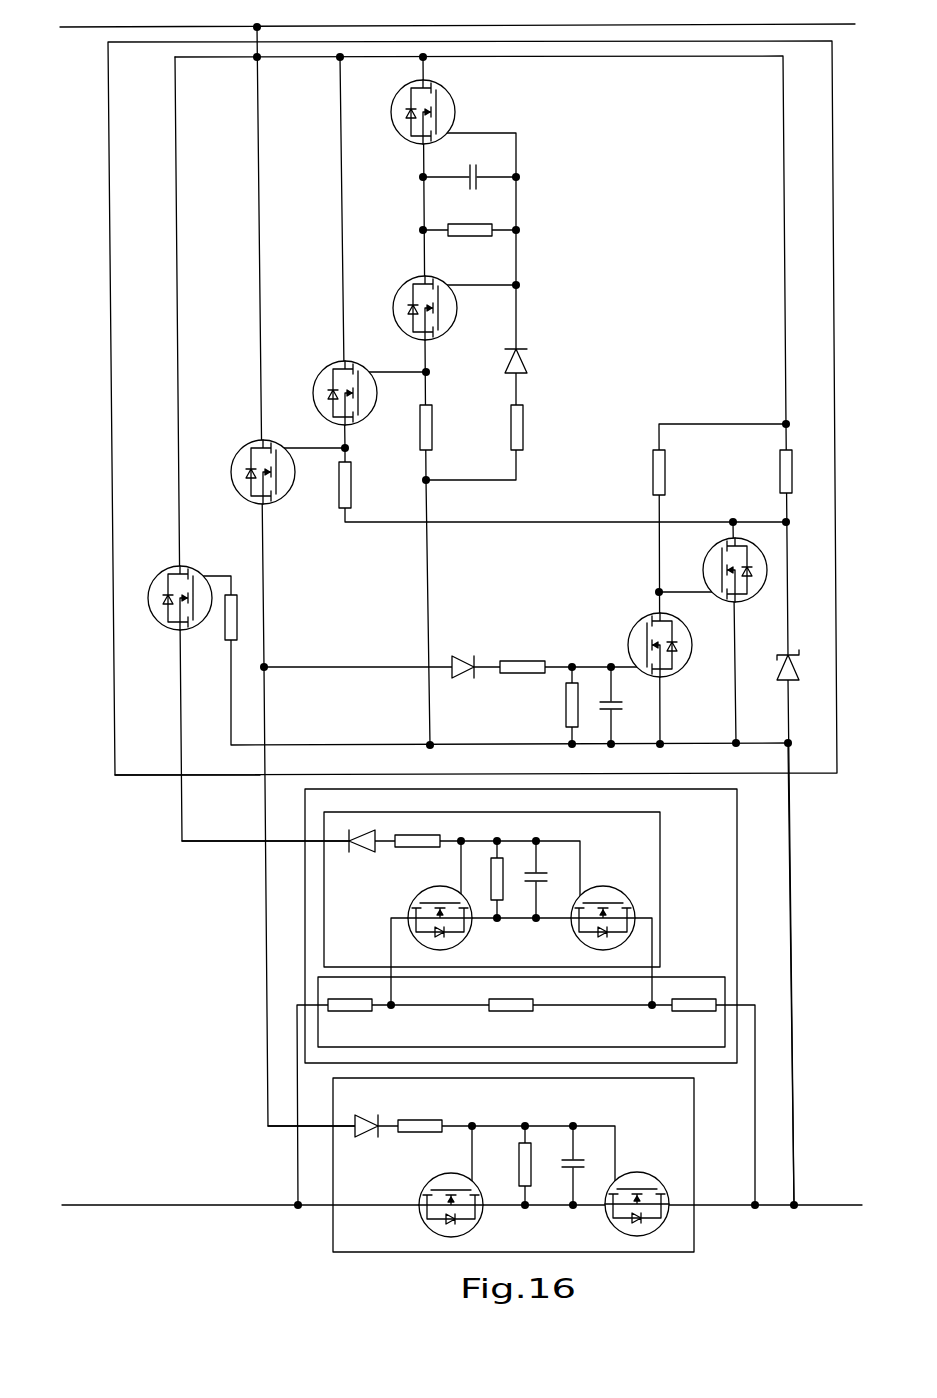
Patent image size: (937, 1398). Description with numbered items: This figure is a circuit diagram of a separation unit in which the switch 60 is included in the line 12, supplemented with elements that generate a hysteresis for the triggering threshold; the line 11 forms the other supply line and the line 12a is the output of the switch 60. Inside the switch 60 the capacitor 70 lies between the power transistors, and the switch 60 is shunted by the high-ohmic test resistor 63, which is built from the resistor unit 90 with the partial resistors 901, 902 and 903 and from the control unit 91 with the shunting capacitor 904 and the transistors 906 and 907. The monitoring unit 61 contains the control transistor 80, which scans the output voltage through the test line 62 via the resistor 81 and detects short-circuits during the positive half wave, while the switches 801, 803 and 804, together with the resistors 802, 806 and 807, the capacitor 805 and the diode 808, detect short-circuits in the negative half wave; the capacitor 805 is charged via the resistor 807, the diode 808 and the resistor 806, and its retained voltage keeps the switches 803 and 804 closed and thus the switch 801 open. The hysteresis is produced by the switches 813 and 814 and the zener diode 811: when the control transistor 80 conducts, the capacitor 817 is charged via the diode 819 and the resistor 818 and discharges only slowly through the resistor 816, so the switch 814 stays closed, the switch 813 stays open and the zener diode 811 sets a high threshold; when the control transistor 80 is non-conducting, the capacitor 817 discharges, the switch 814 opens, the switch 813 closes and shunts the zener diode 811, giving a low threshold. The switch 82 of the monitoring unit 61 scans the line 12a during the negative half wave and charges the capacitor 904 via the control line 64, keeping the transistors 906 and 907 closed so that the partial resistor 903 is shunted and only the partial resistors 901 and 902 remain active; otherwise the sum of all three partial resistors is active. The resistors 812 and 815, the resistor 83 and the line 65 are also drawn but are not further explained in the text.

The line 11 is at (92, 27).
The line 12 is at (153, 1201).
The line at the output of the switch 12a is at (828, 1203).
The switch 60 is at (332, 1225).
The monitoring unit 61 is at (160, 777).
The test line 62 is at (798, 1032).
The test resistor 63 is at (740, 943).
The control line 64 is at (232, 842).
The connection line 65 is at (335, 1127).
The capacitor 70 is at (583, 1158).
The control transistor 80 is at (233, 450).
The resistor 81 is at (338, 488).
The switch 82 is at (153, 622).
The resistor 83 is at (222, 635).
The resistor unit 90 is at (692, 975).
The control unit 91 is at (665, 893).
The switch 801 is at (322, 372).
The resistor 802 is at (433, 418).
The switch 803 is at (397, 290).
The switch 804 is at (392, 112).
The capacitor 805 is at (480, 168).
The resistor 806 is at (472, 224).
The resistor 807 is at (525, 428).
The diode 808 is at (525, 365).
The zener diode 811 is at (777, 678).
The resistor 812 is at (783, 480).
The switch 813 is at (700, 572).
The switch 814 is at (640, 627).
The resistor 815 is at (653, 465).
The resistor 816 is at (567, 708).
The capacitor 817 is at (603, 700).
The resistor 818 is at (518, 660).
The diode 819 is at (462, 657).
The partial resistor 901 is at (340, 1012).
The partial resistor 902 is at (712, 1011).
The partial resistor 903 is at (517, 1012).
The shunting capacitor 904 is at (545, 876).
The transistor 906 is at (455, 945).
The transistor 907 is at (590, 946).